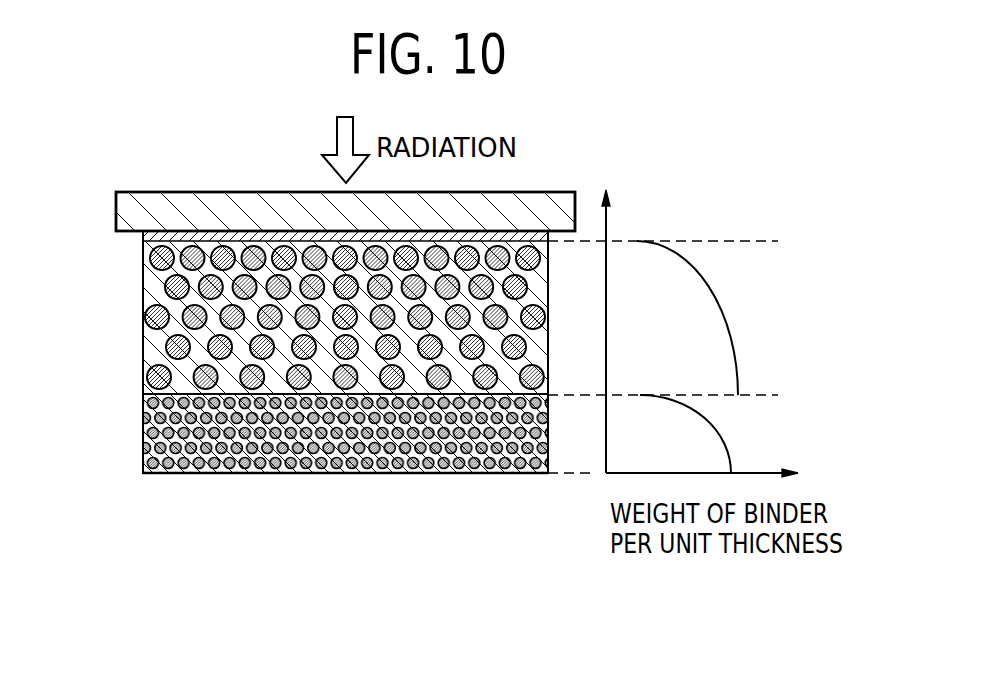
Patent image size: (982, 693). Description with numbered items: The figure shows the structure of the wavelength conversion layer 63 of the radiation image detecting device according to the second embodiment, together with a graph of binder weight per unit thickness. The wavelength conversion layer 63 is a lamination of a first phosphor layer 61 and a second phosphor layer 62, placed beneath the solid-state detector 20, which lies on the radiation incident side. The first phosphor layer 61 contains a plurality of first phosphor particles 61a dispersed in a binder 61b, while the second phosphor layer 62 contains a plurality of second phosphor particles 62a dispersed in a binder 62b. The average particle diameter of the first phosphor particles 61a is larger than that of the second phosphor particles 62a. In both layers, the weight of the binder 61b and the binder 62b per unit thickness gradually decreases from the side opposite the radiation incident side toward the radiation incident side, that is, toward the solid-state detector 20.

The solid-state detector 20 is at (116, 209).
The first phosphor layer 61 is at (63, 240).
The first phosphor particles 61a is at (151, 259).
The binder 61b is at (160, 296).
The second phosphor layer 62 is at (63, 403).
The second phosphor particles 62a is at (148, 432).
The binder 62b is at (143, 450).
The wavelength conversion layer 63 is at (133, 484).